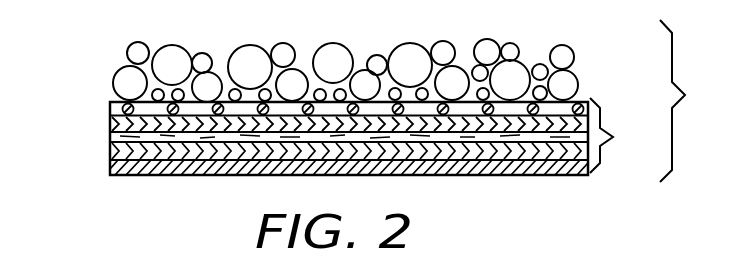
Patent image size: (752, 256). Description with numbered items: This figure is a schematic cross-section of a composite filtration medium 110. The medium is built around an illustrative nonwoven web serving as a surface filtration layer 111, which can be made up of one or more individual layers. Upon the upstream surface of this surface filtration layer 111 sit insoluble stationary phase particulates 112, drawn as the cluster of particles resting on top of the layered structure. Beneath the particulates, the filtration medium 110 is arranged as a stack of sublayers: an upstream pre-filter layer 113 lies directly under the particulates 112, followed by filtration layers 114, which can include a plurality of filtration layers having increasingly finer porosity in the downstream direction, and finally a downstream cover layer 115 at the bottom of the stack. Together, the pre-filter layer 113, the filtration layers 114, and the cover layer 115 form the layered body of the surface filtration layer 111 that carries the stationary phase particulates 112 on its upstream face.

The composite filtration medium 110 is at (696, 101).
The surface filtration layer 111 is at (387, 136).
The insoluble stationary phase particulates 112 is at (133, 52).
The upstream pre-filter layer 113 is at (110, 107).
The filtration layers 114 is at (110, 146).
The downstream cover layer 115 is at (538, 176).